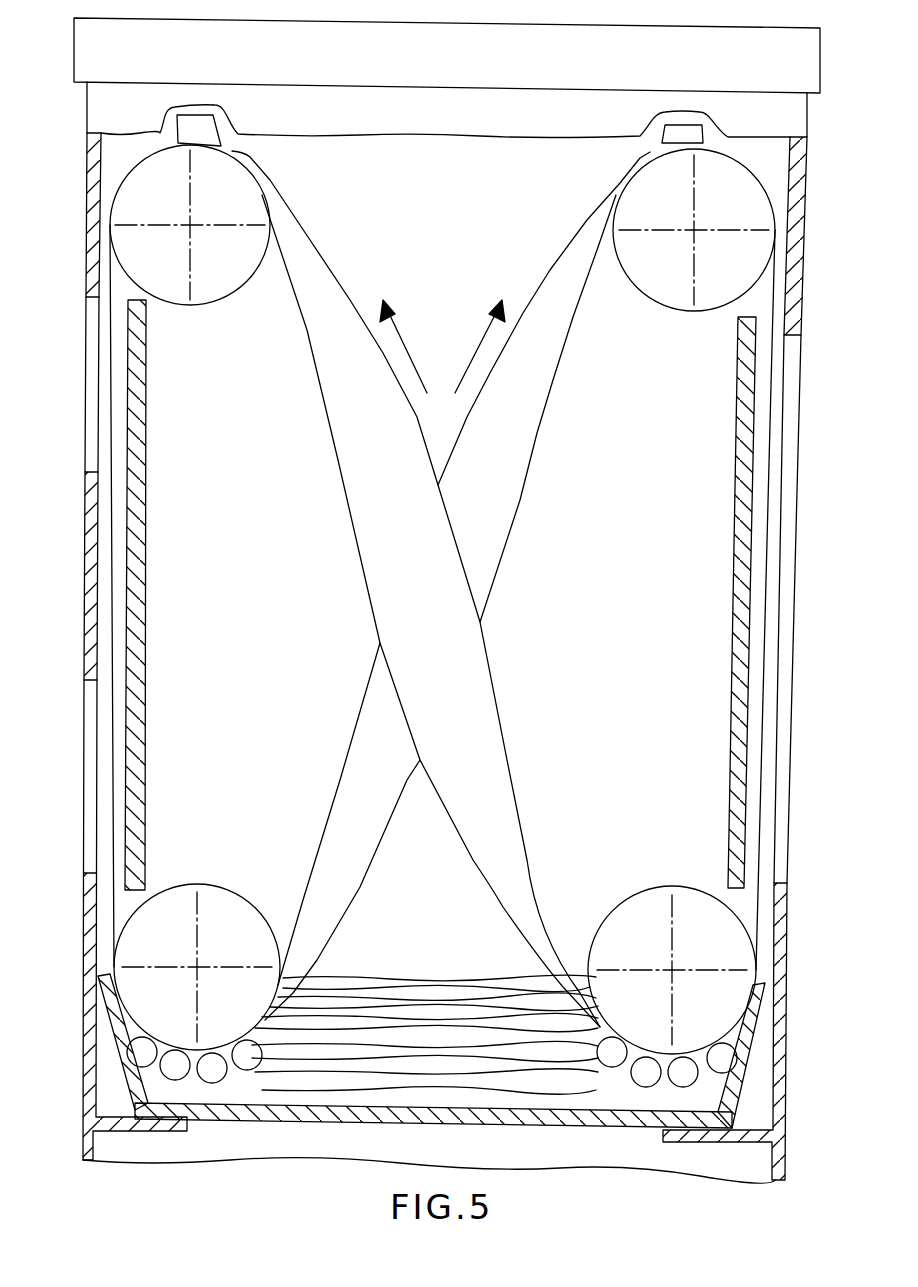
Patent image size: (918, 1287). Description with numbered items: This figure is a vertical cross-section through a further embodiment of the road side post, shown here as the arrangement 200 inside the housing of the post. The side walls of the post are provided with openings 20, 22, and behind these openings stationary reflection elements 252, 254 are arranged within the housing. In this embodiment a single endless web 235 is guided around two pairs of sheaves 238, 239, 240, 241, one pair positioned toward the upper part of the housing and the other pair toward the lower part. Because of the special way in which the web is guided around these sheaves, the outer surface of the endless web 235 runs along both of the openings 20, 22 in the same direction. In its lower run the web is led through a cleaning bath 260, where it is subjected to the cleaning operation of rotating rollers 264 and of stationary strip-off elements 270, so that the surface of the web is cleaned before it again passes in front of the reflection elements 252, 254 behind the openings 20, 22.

The dryer apparatus 200 is at (458, 195).
The stationary strip-off element 270 is at (218, 135).
The opening 22 is at (88, 403).
The opening 20 is at (794, 543).
The stationary reflection element 252 is at (141, 550).
The stationary reflection element 254 is at (738, 511).
The sheave 238 is at (213, 301).
The sheave 240 is at (668, 304).
The sheave 239 is at (222, 898).
The sheave 241 is at (640, 907).
The endless web 235 is at (508, 489).
The cleaning bath 260 is at (364, 993).
The rotating roller 264 is at (142, 1057).